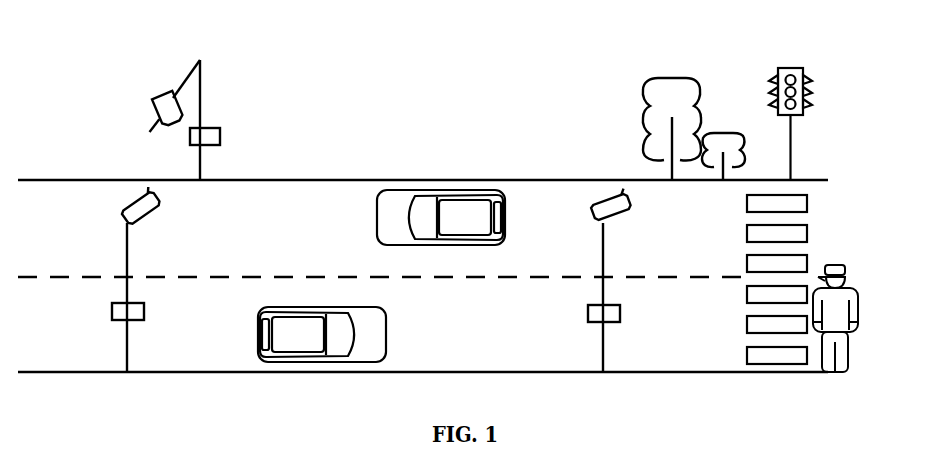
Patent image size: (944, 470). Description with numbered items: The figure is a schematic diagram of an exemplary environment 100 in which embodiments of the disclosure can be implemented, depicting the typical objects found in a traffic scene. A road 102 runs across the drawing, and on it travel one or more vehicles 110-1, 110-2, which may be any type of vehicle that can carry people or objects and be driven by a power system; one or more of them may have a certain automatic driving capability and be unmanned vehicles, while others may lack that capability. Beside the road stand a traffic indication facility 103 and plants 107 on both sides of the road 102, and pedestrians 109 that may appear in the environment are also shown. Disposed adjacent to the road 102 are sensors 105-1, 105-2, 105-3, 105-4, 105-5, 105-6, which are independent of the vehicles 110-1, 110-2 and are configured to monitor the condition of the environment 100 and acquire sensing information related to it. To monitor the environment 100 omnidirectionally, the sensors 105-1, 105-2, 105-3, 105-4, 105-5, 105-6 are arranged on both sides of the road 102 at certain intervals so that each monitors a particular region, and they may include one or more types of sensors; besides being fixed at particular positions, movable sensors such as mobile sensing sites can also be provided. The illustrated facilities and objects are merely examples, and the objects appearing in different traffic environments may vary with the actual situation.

The environment 100 is at (443, 58).
The road 102 is at (65, 217).
The traffic indication facility 103 is at (807, 73).
The sensor 105-1 is at (112, 310).
The sensor 105-2 is at (158, 196).
The sensor 105-3 is at (153, 102).
The sensor 105-4 is at (220, 135).
The sensor 105-5 is at (630, 206).
The sensor 105-6 is at (622, 315).
The plants 107 is at (670, 80).
The pedestrians 109 is at (836, 266).
The vehicle 110-1 is at (388, 330).
The vehicle 110-2 is at (378, 224).